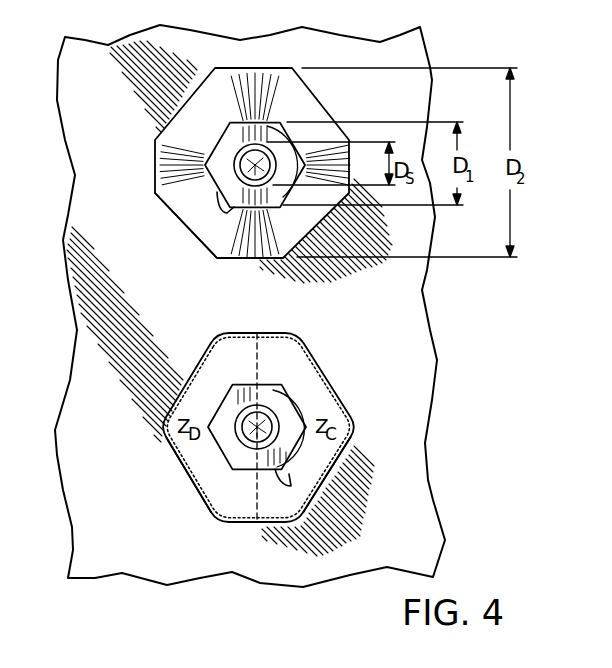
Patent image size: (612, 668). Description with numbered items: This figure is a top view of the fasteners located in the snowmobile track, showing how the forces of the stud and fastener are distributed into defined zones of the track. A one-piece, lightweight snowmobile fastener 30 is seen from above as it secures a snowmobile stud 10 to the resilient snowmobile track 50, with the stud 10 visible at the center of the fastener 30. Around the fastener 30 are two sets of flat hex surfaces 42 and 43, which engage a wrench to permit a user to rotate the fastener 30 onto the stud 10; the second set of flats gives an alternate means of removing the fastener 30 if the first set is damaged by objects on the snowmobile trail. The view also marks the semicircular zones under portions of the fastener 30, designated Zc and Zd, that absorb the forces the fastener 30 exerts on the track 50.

The snowmobile stud 10 is at (240, 152).
The snowmobile fastener 30 is at (180, 197).
The flat hex surfaces 42 is at (256, 348).
The flat hex surfaces 43 is at (177, 222).
The snowmobile track 50 is at (428, 340).